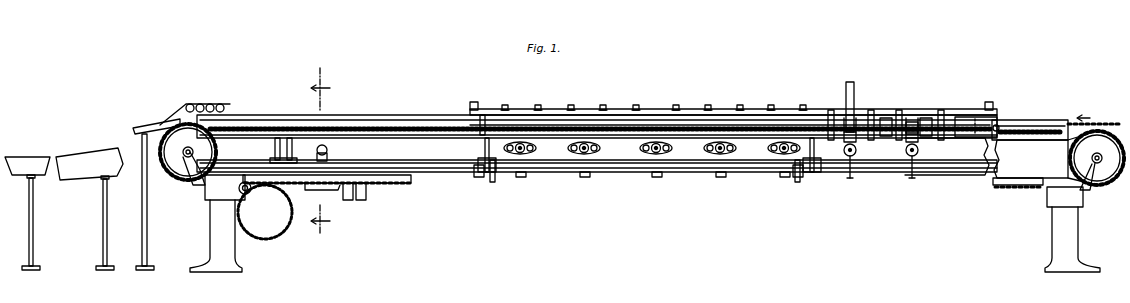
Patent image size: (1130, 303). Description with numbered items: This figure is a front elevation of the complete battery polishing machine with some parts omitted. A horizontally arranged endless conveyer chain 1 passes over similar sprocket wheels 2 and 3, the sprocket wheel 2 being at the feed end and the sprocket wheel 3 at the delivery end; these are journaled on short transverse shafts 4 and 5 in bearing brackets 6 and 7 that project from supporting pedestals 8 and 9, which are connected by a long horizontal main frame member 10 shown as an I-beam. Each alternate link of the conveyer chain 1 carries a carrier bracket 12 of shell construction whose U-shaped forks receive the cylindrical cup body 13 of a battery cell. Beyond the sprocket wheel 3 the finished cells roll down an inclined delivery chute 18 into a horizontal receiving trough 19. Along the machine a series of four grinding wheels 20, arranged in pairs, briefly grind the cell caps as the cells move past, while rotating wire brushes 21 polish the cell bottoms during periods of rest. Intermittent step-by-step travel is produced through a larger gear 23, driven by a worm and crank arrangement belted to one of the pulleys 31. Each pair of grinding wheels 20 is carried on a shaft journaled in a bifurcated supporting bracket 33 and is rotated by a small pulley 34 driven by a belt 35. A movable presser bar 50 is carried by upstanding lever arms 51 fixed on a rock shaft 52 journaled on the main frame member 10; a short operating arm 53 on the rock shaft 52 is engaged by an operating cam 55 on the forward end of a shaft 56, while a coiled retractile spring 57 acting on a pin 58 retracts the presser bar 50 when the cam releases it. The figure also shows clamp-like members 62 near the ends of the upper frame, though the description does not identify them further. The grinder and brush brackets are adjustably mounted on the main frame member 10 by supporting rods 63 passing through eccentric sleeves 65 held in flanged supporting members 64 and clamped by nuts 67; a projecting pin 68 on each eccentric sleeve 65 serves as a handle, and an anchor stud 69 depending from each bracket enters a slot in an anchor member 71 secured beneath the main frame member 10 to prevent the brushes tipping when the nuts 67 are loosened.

The conveyer chain 1 is at (382, 126).
The sprocket wheel 2 is at (1096, 158).
The sprocket wheel 3 is at (165, 162).
The transverse shaft 4 is at (1100, 162).
The transverse shaft 5 is at (178, 158).
The bearing bracket 6 is at (1085, 175).
The bearing bracket 7 is at (196, 178).
The supporting pedestal 8 is at (1068, 237).
The supporting pedestal 9 is at (212, 232).
The main frame member 10 is at (970, 160).
The carrier bracket 12 is at (1104, 117).
The cup body 13 is at (996, 124).
The delivery chute 18 is at (100, 155).
The receiving trough 19 is at (25, 160).
The grinding wheel 20 is at (831, 108).
The brush 21 is at (505, 105).
The larger gear 23 is at (270, 216).
The pulley 31 is at (352, 200).
The supporting bracket 33 is at (857, 148).
The small pulley 34 is at (913, 120).
The belt 35 is at (853, 90).
The presser bar 50 is at (643, 128).
The lever arm 51 is at (483, 146).
The rock shaft 52 is at (438, 168).
The operating arm 53 is at (330, 159).
The operating cam 55 is at (328, 150).
The shaft 56 is at (318, 154).
The retractile spring 57 is at (492, 180).
The pin 58 is at (480, 177).
The clamp 62 is at (484, 108).
The supporting rod 63 is at (522, 153).
The flanged supporting member 64 is at (526, 153).
The eccentric sleeve 65 is at (536, 149).
The nut 67 is at (662, 152).
The projecting pin 68 is at (510, 152).
The anchor stud 69 is at (518, 152).
The anchor member 71 is at (658, 177).